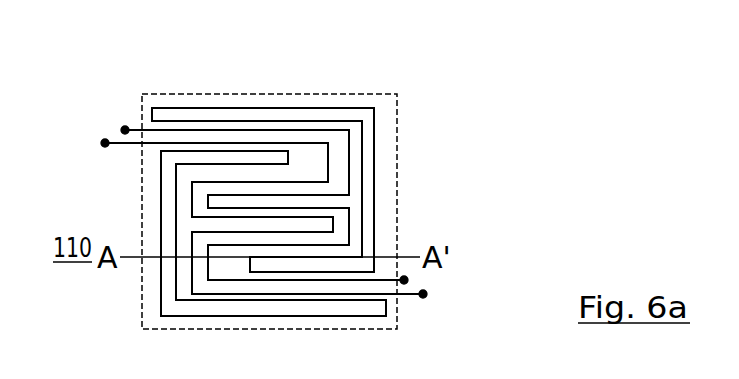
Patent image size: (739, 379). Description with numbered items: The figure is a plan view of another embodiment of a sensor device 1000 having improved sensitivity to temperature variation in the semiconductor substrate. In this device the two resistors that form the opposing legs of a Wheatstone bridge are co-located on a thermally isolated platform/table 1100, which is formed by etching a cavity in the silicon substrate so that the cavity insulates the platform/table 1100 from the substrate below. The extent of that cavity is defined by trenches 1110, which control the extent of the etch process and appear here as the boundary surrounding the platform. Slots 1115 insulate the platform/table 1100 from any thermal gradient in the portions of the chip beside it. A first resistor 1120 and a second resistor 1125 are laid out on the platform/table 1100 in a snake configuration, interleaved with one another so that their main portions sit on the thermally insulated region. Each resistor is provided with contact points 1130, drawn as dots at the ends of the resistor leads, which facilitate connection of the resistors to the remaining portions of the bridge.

The sensor device 1000 is at (556, 99).
The thermally isolated platform/table 1100 is at (240, 224).
The trenches 1110 is at (142, 318).
The slots 1115 is at (331, 112).
The first resistor 1120 is at (351, 150).
The second resistor 1125 is at (328, 182).
The contact points 1130 is at (125, 129).